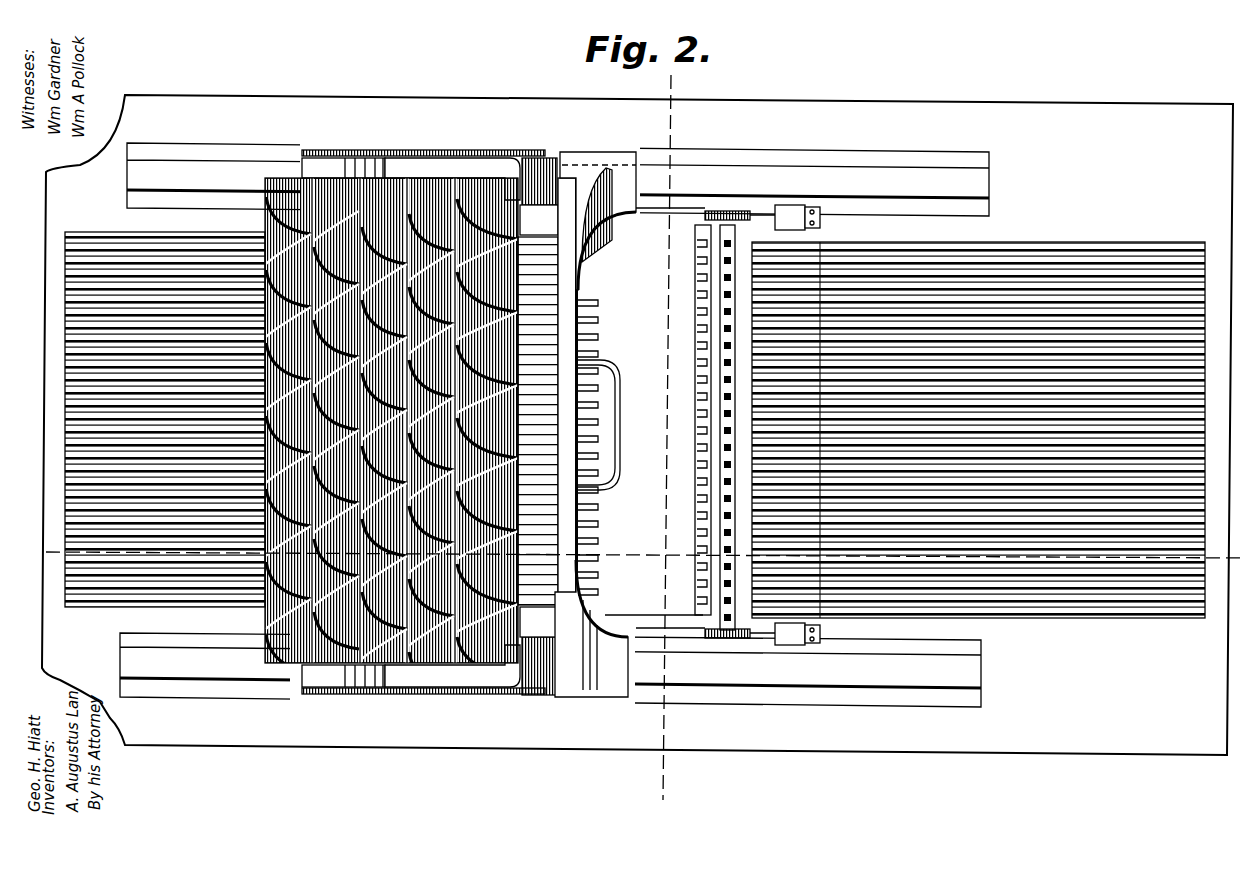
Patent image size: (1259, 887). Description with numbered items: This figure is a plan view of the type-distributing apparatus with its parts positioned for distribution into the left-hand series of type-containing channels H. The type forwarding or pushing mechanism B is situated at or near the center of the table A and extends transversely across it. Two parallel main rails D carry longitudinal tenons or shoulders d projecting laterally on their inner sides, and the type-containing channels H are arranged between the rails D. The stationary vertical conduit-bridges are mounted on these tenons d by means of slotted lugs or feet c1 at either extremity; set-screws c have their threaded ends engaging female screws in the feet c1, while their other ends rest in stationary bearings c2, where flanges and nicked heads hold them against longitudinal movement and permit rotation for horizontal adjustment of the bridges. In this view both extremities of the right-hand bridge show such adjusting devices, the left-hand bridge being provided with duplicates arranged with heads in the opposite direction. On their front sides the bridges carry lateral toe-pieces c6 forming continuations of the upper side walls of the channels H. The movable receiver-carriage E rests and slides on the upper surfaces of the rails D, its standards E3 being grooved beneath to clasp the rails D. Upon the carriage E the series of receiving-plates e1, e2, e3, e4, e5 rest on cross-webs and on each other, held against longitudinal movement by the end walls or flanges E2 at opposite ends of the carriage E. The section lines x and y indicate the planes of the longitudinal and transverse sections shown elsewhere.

The table A is at (637, 425).
The type forwarding or pushing mechanism B is at (656, 427).
The main rails D is at (554, 425).
The tenons or shoulders d is at (554, 433).
The stator casing wall a is at (629, 424).
The type-containing channels H is at (635, 425).
The receiver-carriage E is at (343, 422).
The end walls or flanges E2 is at (471, 426).
The standards E3 is at (402, 150).
The first or lower receiving-plate e1 is at (288, 434).
The second receiving-plate e2 is at (336, 430).
The third receiving-plate e3 is at (384, 443).
The fourth receiving-plate e4 is at (431, 451).
The fifth receiving-plate e5 is at (487, 438).
The set-screws c is at (704, 216).
The lugs or feet c1 is at (740, 424).
The lugs or stationary bearings c2 is at (797, 423).
The lateral projections or toe-pieces c6 is at (801, 430).
The line x x is at (640, 557).
The line y y is at (661, 440).